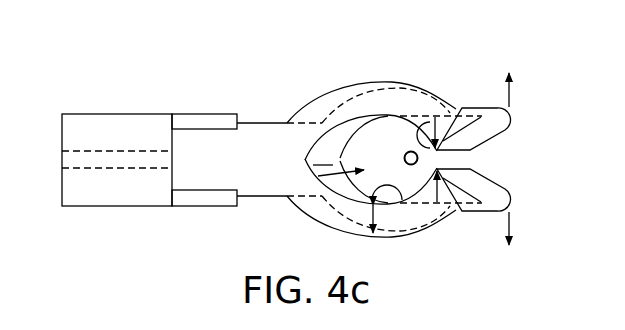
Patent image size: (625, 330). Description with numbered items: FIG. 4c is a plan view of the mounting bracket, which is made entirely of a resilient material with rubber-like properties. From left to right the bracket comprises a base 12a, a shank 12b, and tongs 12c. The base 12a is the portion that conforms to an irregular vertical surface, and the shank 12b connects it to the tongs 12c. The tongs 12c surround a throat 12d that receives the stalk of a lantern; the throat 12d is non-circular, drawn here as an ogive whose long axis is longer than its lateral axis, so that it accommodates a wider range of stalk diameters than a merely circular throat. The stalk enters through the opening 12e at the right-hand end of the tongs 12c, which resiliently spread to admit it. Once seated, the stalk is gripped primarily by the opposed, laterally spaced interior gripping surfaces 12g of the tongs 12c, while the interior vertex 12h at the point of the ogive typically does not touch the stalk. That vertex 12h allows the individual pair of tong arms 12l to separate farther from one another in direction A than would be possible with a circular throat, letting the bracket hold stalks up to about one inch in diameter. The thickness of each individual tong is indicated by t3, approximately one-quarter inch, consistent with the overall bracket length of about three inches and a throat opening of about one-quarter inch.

The base 12a is at (114, 100).
The shank 12b is at (268, 104).
The tongs 12c is at (404, 68).
The throat 12d is at (302, 198).
The opening 12e is at (477, 157).
The gripping surfaces 12g is at (352, 132).
The interior vertex 12h is at (323, 158).
The tong arm 12l is at (452, 92).
The individual tong thickness t3 is at (375, 218).